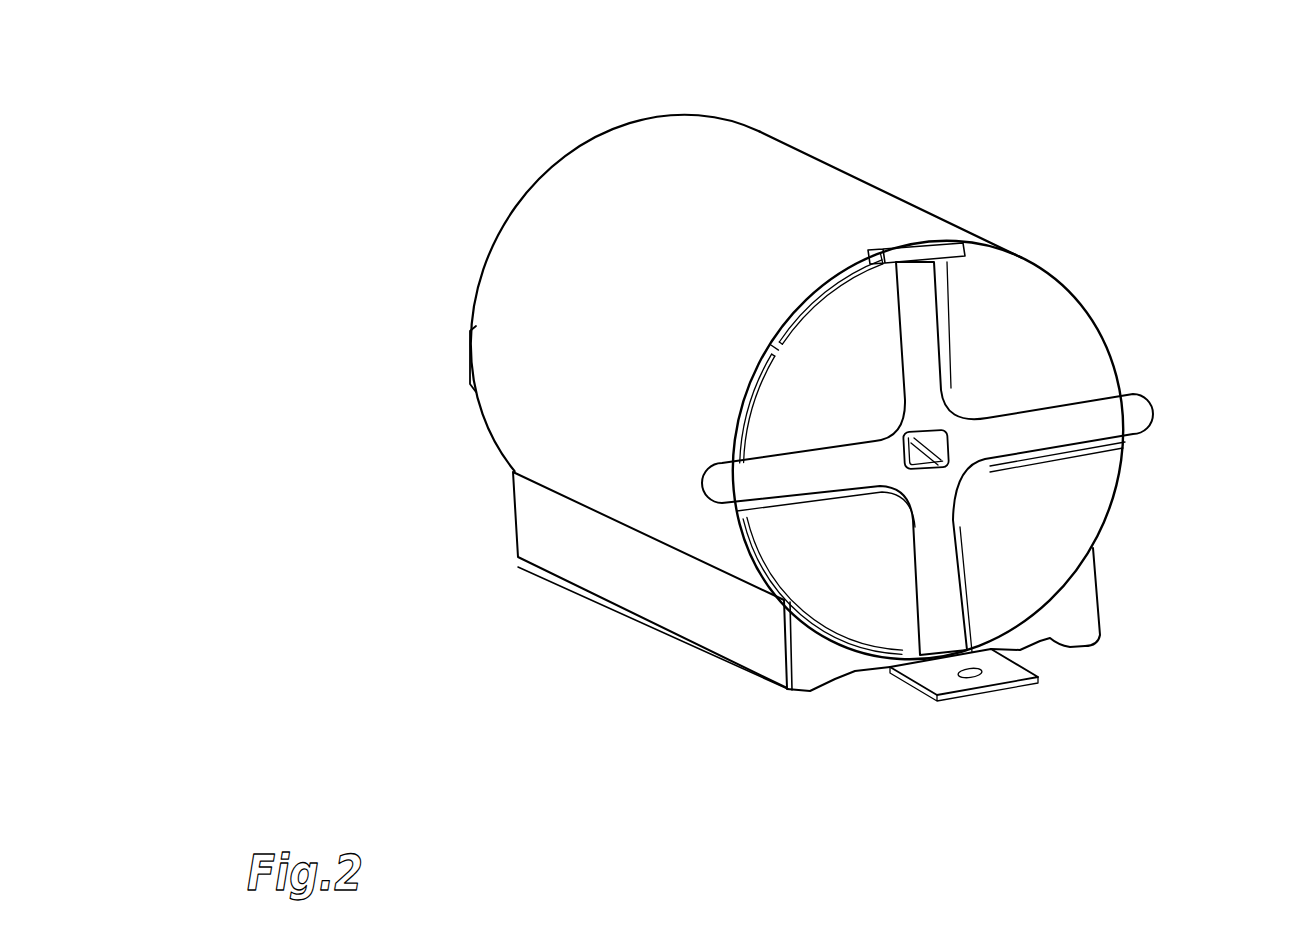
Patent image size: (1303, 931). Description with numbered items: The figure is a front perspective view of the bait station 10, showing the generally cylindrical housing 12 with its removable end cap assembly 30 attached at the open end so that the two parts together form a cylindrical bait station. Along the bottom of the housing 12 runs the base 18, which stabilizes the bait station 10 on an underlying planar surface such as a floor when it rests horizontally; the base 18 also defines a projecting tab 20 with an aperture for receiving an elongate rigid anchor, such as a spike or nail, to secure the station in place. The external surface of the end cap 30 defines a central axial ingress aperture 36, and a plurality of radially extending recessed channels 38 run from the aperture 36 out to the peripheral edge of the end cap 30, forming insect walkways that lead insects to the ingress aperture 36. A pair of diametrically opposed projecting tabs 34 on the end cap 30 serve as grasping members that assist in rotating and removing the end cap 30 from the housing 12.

The bait station 10 is at (860, 136).
The housing 12 is at (634, 344).
The base 18 is at (658, 594).
The projecting tab 20 is at (940, 697).
The end cap assembly 30 is at (1045, 336).
The projecting tabs 34 is at (712, 480).
The axial ingress aperture 36 is at (983, 417).
The recessed channels 38 is at (925, 343).